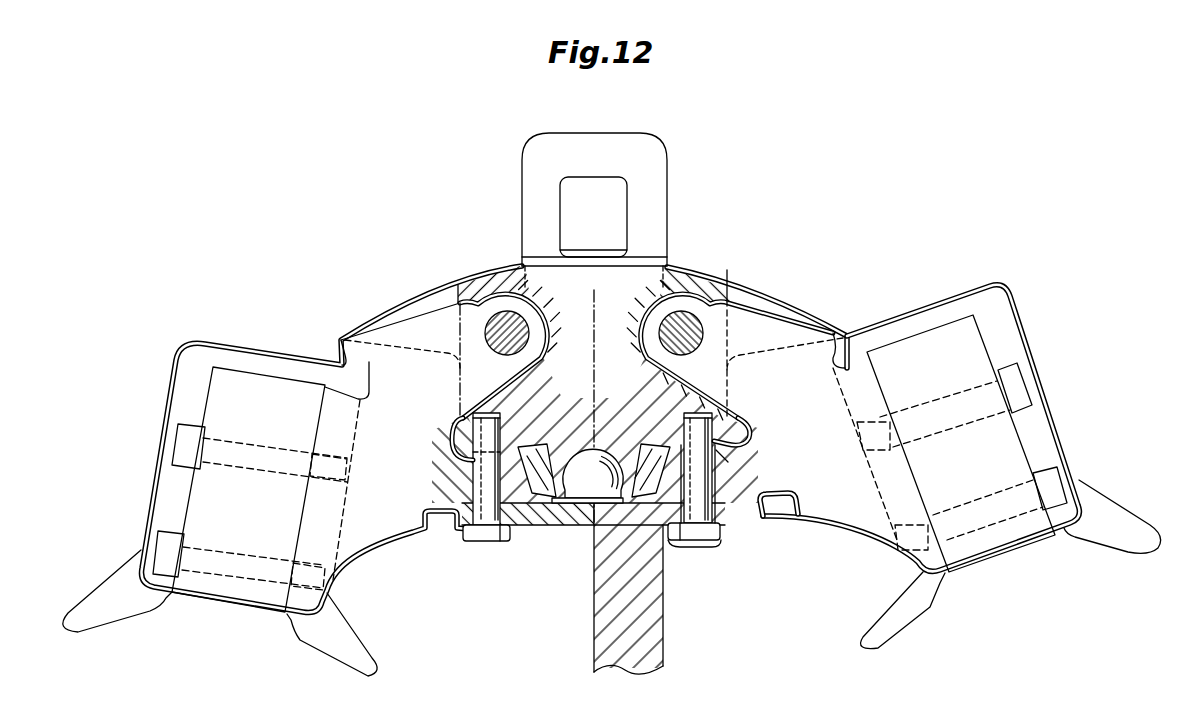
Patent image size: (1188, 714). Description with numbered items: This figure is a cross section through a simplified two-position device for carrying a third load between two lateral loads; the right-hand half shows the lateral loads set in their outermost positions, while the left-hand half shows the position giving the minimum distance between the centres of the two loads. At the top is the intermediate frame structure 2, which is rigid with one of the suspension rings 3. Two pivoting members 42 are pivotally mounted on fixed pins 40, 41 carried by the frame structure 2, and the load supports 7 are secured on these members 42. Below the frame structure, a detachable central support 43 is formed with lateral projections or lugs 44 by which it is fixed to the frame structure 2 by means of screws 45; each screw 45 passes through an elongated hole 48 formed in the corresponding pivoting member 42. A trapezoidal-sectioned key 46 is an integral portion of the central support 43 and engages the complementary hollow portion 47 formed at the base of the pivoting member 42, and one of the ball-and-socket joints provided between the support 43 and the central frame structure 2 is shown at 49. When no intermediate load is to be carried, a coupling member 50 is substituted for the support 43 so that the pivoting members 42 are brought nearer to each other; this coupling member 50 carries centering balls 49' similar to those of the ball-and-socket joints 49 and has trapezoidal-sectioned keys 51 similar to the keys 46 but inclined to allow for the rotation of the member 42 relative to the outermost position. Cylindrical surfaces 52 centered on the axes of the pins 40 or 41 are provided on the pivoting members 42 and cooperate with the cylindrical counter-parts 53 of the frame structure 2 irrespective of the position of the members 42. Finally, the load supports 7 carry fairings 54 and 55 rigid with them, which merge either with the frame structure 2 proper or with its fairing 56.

The intermediate frame structure 2 is at (610, 298).
The suspension ring 3 is at (653, 200).
The load support 7 is at (220, 393).
The fixed pin 40 is at (703, 330).
The fixed pin 41 is at (500, 313).
The pivoting member 42 is at (385, 385).
The detachable central support 43 is at (647, 637).
The lateral projection or lug 44 is at (712, 540).
The screw 45 is at (700, 432).
The trapezoidal-sectioned key 46 is at (742, 485).
The complementary hollow portion 47 is at (688, 477).
The elongated hole 48 is at (722, 455).
The ball-and-socket joint 49 is at (634, 521).
The centering ball 49' is at (580, 554).
The coupling member 50 is at (533, 518).
The trapezoidal-sectioned key 51 is at (490, 537).
The cylindrical surface 52 is at (523, 442).
The cylindrical counter-part 53 is at (510, 458).
The fairing 54 is at (1050, 396).
The fairing 55 is at (150, 476).
The fairing of the frame structure 56 is at (808, 312).